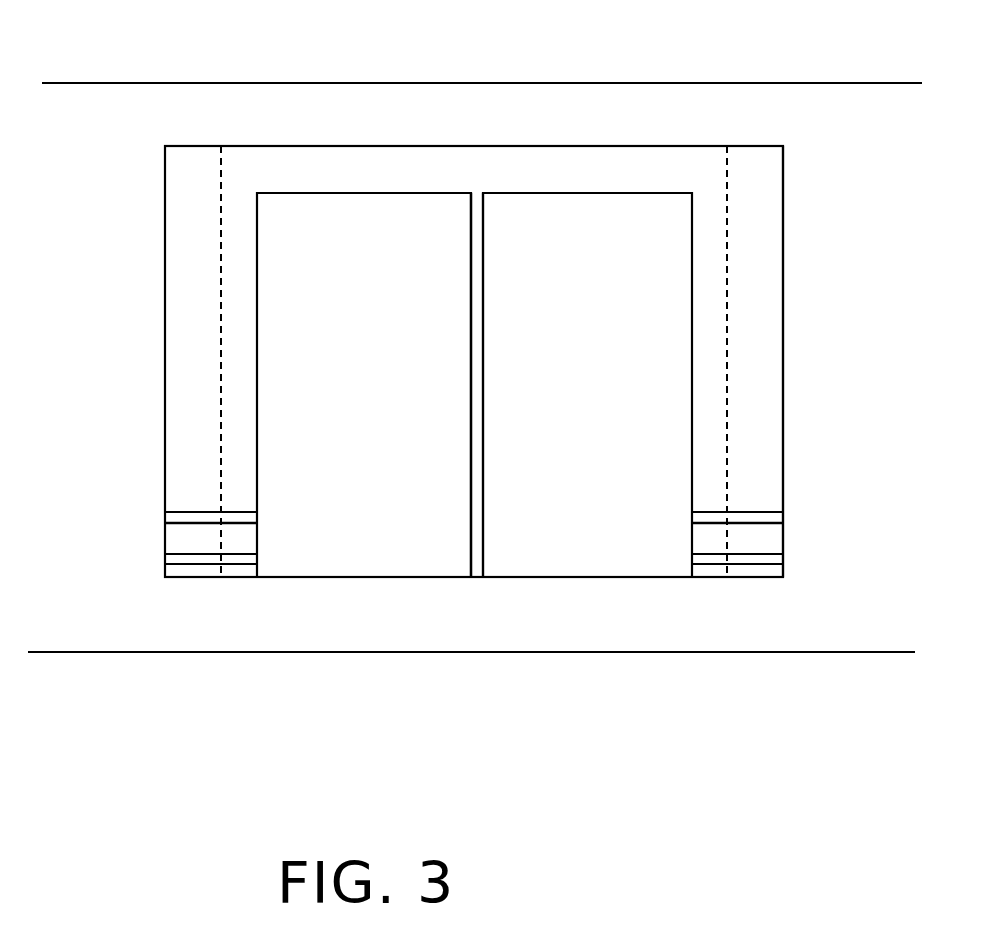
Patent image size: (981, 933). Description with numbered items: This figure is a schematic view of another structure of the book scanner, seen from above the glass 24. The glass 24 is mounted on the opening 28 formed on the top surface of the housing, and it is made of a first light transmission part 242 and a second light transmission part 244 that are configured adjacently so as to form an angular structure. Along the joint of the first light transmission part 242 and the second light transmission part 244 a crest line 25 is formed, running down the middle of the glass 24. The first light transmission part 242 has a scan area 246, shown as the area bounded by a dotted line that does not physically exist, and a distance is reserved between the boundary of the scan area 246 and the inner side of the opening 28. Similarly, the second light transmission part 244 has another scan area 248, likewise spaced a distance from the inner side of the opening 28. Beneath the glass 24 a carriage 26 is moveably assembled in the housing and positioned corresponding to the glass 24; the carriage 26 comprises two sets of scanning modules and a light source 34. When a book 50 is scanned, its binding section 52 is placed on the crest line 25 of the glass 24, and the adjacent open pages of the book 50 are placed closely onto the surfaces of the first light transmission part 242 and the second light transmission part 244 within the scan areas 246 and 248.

The glass 24 is at (603, 140).
The first light transmission part 242 is at (748, 163).
The second light transmission part 244 is at (203, 165).
The scan area 246 is at (703, 229).
The scan area 248 is at (240, 237).
The crest line 25 is at (477, 190).
The carriage 26 is at (737, 513).
The opening 28 is at (783, 317).
The light source 34 is at (748, 540).
The book 50 is at (355, 225).
The binding section 52 is at (468, 508).